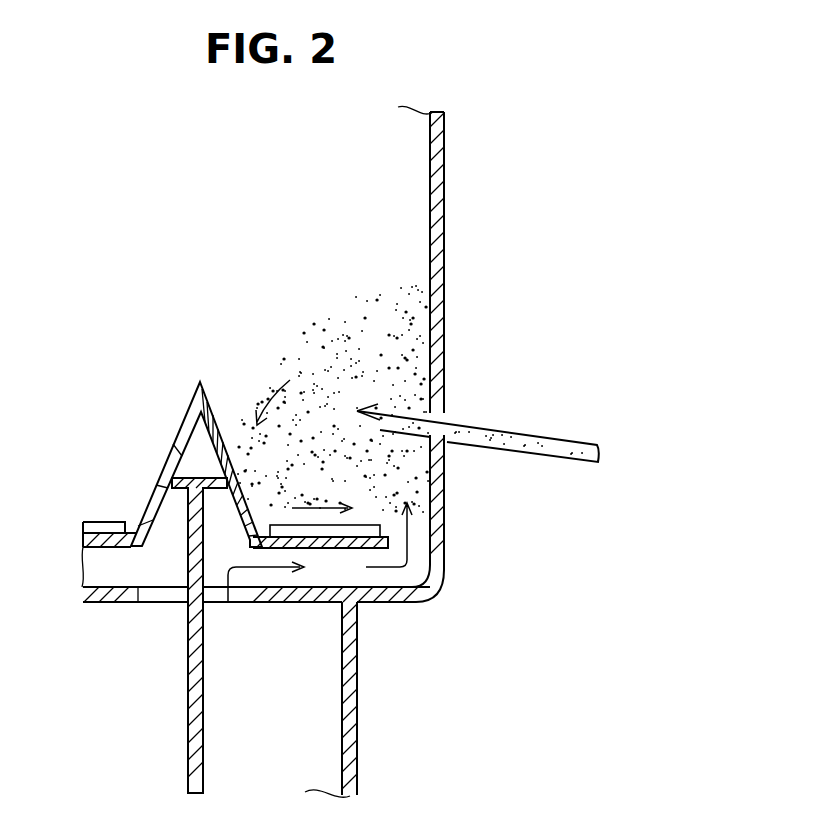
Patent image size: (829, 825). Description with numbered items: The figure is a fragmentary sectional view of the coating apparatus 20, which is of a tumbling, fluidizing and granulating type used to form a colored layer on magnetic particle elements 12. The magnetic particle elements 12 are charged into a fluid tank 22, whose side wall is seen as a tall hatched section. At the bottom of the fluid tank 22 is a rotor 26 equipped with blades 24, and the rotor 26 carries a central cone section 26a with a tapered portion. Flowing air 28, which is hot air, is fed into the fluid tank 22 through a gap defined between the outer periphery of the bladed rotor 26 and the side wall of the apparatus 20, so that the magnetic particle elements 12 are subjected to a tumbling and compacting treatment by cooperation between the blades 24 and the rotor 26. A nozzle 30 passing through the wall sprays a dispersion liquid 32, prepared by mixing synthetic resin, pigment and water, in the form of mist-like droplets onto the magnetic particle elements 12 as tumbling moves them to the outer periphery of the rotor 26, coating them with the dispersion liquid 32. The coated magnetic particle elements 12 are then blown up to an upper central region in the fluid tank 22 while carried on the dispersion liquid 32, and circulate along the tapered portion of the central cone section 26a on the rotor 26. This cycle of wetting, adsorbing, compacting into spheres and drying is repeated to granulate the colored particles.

The magnetic particle elements 12 is at (323, 340).
The coating apparatus 20 is at (471, 289).
The fluid tank 22 is at (447, 167).
The blades 24 is at (383, 536).
The rotor 26 is at (158, 507).
The central cone section 26a is at (171, 451).
The flowing air 28 is at (405, 527).
The nozzle 30 is at (515, 437).
The dispersion liquid 32 is at (465, 433).